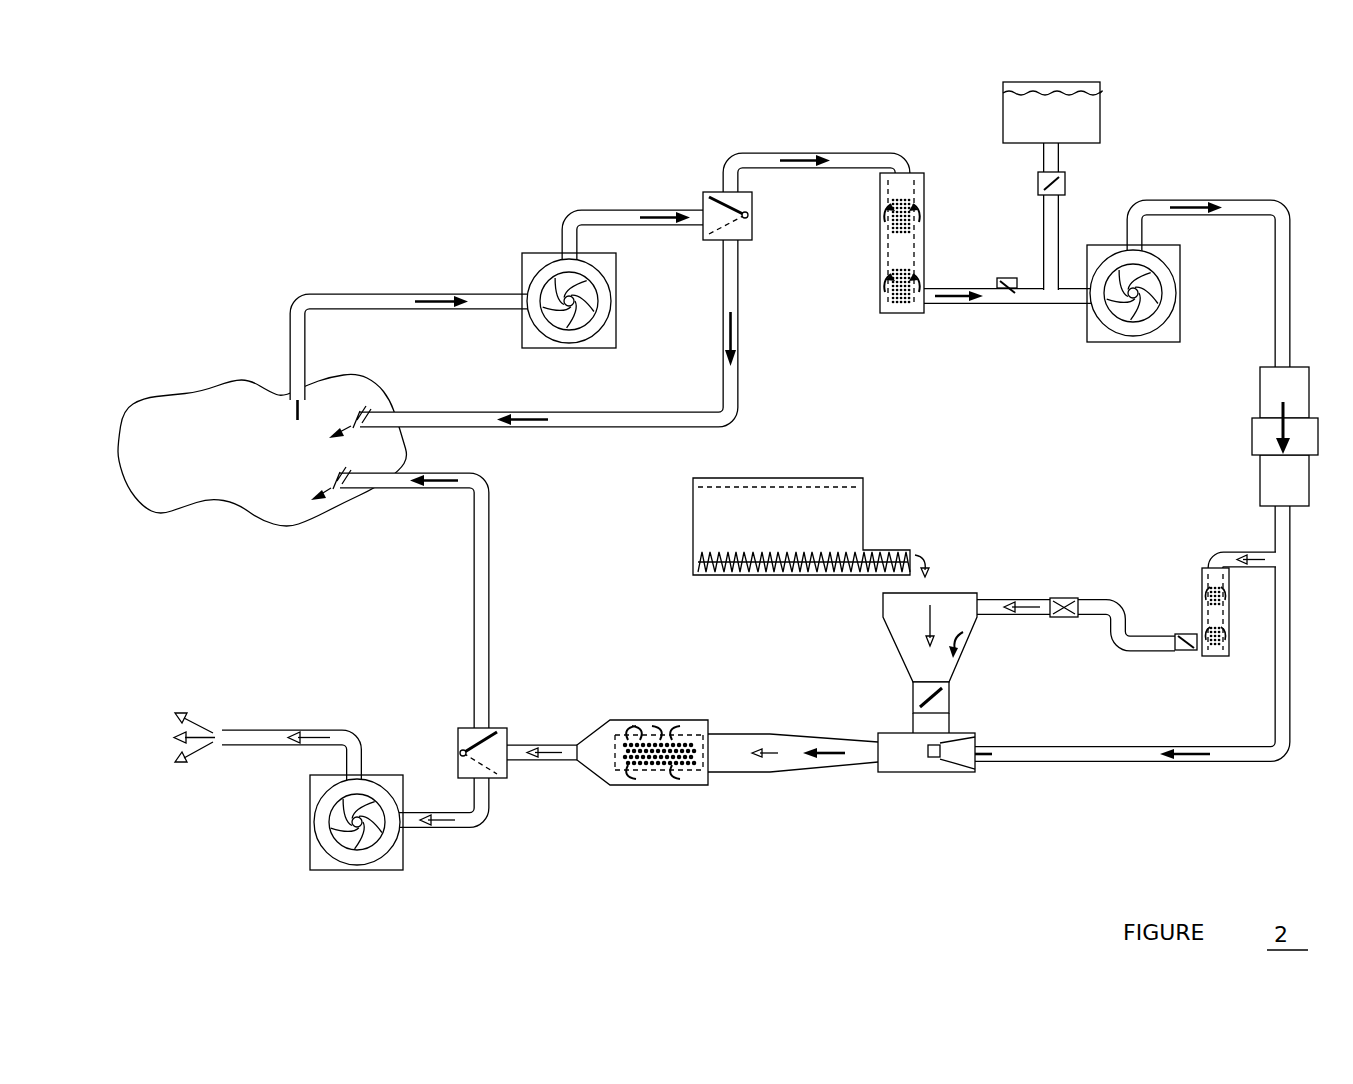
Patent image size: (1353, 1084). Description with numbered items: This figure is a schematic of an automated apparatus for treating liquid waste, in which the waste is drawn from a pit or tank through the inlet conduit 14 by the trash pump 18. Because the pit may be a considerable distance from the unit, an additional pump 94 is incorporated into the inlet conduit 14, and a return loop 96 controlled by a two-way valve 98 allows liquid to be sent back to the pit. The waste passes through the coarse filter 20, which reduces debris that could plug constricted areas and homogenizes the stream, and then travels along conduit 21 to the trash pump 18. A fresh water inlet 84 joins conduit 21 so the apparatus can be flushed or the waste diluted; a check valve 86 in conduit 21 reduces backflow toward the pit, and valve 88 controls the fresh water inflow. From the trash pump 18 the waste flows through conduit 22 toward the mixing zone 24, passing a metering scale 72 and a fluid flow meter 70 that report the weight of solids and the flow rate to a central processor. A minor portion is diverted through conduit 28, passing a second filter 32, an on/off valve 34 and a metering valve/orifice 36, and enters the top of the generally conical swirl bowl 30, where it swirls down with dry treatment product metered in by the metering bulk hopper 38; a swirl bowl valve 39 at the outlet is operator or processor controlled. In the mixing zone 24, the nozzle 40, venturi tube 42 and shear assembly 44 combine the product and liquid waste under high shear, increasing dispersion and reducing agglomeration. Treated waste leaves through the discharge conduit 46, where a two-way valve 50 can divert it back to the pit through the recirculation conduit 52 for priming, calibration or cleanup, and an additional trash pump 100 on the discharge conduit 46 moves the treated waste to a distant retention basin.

The inlet conduit 14 is at (597, 215).
The trash pump 18 is at (1164, 345).
The coarse filter 20 is at (924, 238).
The conduit 21 is at (1039, 306).
The conduit 22 is at (1248, 200).
The mixing zone 24 is at (937, 783).
The conduit 28 is at (1224, 555).
The swirl bowl 30 is at (917, 625).
The second filter 32 is at (1202, 596).
The on/off valve 34 is at (1186, 651).
The metering valve/orifice 36 is at (1058, 619).
The metering bulk hopper 38 is at (863, 528).
The swirl bowl valve 39 is at (950, 700).
The nozzle 40 is at (938, 761).
The venturi tube 42 is at (880, 770).
The shear assembly 44 is at (690, 720).
The discharge conduit 46 is at (569, 761).
The 2-way valve 50 is at (500, 738).
The recirculation conduit 52 is at (489, 622).
The fluid flow meter 70 is at (1258, 444).
The metering scale 72 is at (1259, 389).
The fresh water inlet 84 is at (1059, 274).
The check valve 86 is at (1005, 277).
The valve 88 is at (1065, 190).
The additional pump 94 is at (610, 340).
The return loop 96 is at (625, 428).
The 2-way valve 98 is at (741, 243).
The additional trash pump 100 is at (404, 869).